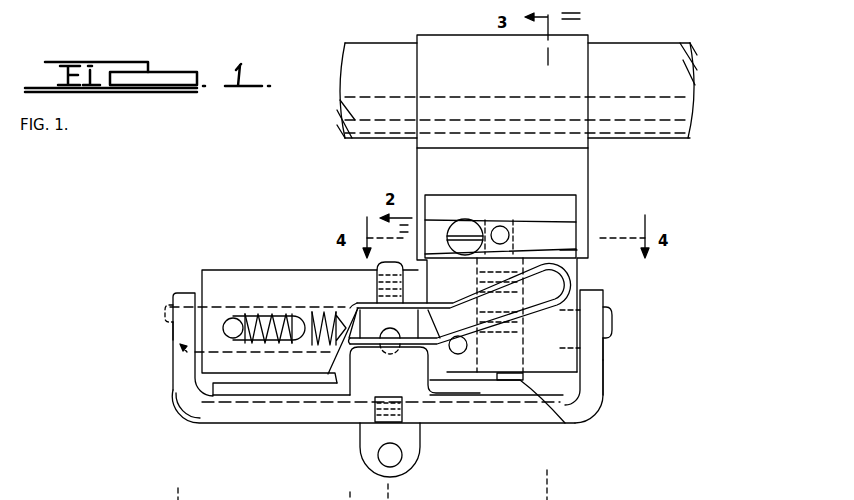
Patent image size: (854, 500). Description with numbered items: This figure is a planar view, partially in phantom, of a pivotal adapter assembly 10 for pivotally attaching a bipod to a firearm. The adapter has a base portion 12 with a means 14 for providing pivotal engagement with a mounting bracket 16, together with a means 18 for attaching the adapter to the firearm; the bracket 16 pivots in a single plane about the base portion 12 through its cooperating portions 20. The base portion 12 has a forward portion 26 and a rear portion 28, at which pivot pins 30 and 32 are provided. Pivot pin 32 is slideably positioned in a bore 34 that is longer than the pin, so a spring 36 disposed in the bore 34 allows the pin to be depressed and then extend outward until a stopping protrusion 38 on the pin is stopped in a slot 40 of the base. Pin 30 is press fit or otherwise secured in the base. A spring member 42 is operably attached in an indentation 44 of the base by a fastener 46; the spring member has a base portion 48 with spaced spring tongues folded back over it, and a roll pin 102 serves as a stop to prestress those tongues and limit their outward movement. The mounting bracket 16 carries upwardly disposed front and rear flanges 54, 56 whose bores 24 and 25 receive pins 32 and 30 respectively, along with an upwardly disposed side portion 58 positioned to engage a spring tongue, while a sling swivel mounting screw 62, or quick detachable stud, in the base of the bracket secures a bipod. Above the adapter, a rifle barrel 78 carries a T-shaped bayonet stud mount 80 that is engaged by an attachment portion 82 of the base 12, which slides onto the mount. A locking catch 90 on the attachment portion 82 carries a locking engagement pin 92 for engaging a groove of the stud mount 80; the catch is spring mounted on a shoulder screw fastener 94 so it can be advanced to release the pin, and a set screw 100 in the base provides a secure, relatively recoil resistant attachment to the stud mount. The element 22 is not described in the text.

The pivotal adapter assembly 10 is at (228, 220).
The base portion 12 is at (206, 266).
The means for providing pivotal engagement 14 is at (168, 330).
The mounting bracket 16 is at (598, 410).
The means for attaching the pivotal adapter to a firearm 18 is at (580, 250).
The cooperating portions 20 is at (183, 353).
The arrow / recess 22 is at (170, 344).
The bore 24 is at (168, 312).
The bore 25 is at (614, 312).
The forward portion 26 is at (582, 290).
The rear portion 28 is at (200, 278).
The pivot pin 30 is at (612, 336).
The pivot pin 32 is at (170, 333).
The bore 34 is at (296, 315).
The spring 36 is at (270, 320).
The stopping protrusion 38 is at (236, 318).
The slot 40 is at (285, 340).
The spring member 42 is at (437, 303).
The indentation 44 is at (332, 368).
The fastener 46 is at (365, 325).
The base portion 48 is at (181, 480).
The front flange 54 is at (595, 380).
The rear flange 56 is at (178, 378).
The side portion 58 is at (368, 378).
The sling swivel mounting screw 62 is at (410, 468).
The rifle barrel 78 is at (640, 52).
The bayonet stud mount 80 is at (588, 176).
The attachment portion 82 is at (580, 227).
The locking catch 90 is at (540, 225).
The locking engagement pin 92 is at (500, 224).
The shoulder screw fastener 94 is at (465, 232).
The set screw 100 is at (560, 420).
The roll pin 102 is at (450, 360).